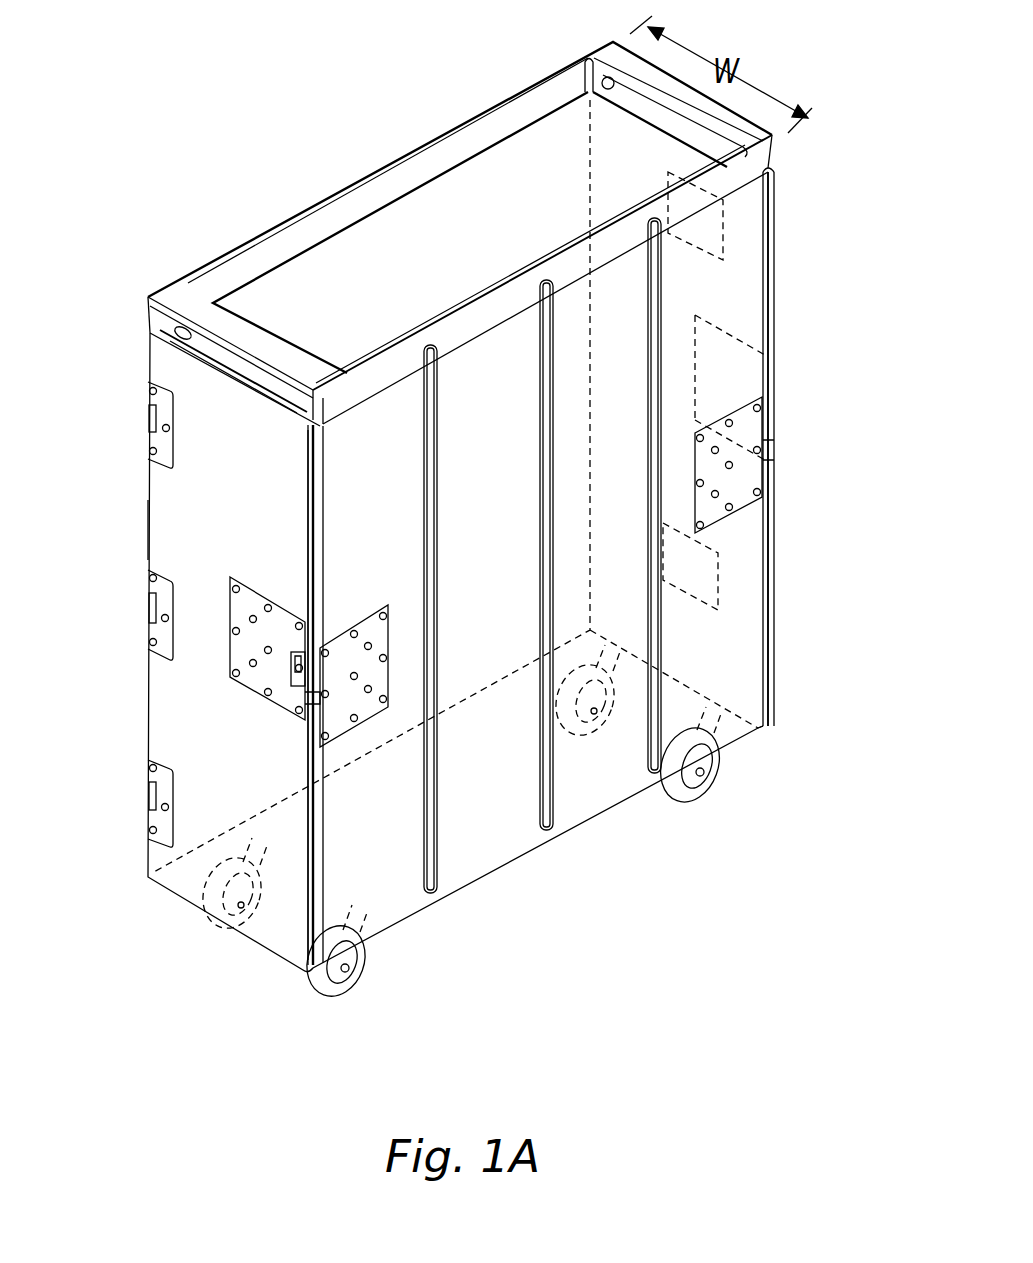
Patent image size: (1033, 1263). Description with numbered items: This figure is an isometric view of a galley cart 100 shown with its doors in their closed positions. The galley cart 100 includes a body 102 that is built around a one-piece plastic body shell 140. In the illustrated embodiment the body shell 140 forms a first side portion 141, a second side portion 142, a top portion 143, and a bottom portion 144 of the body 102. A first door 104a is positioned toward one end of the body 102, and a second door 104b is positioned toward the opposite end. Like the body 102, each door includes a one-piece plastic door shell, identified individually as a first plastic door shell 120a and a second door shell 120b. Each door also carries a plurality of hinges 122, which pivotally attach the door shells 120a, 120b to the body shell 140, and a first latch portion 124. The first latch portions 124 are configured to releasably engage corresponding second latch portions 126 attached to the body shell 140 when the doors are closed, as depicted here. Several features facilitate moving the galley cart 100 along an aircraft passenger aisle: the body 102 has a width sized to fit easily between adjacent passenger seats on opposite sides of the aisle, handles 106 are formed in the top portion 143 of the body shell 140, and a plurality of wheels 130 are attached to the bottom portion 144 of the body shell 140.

The galley cart 100 is at (280, 95).
The body 102 is at (490, 105).
The first door 104a is at (165, 503).
The second door 104b is at (737, 627).
The handles 106 is at (590, 87).
The first plastic door shell 120a is at (213, 527).
The second door shell 120b is at (720, 275).
The hinges 122 is at (148, 405).
The first latch portion 124 is at (257, 682).
The second latch portion 126 is at (367, 713).
The wheels 130 is at (347, 987).
The body shell 140 is at (563, 793).
The first side portion 141 is at (377, 403).
The second side portion 142 is at (683, 322).
The top portion 143 is at (452, 217).
The bottom portion 144 is at (455, 843).